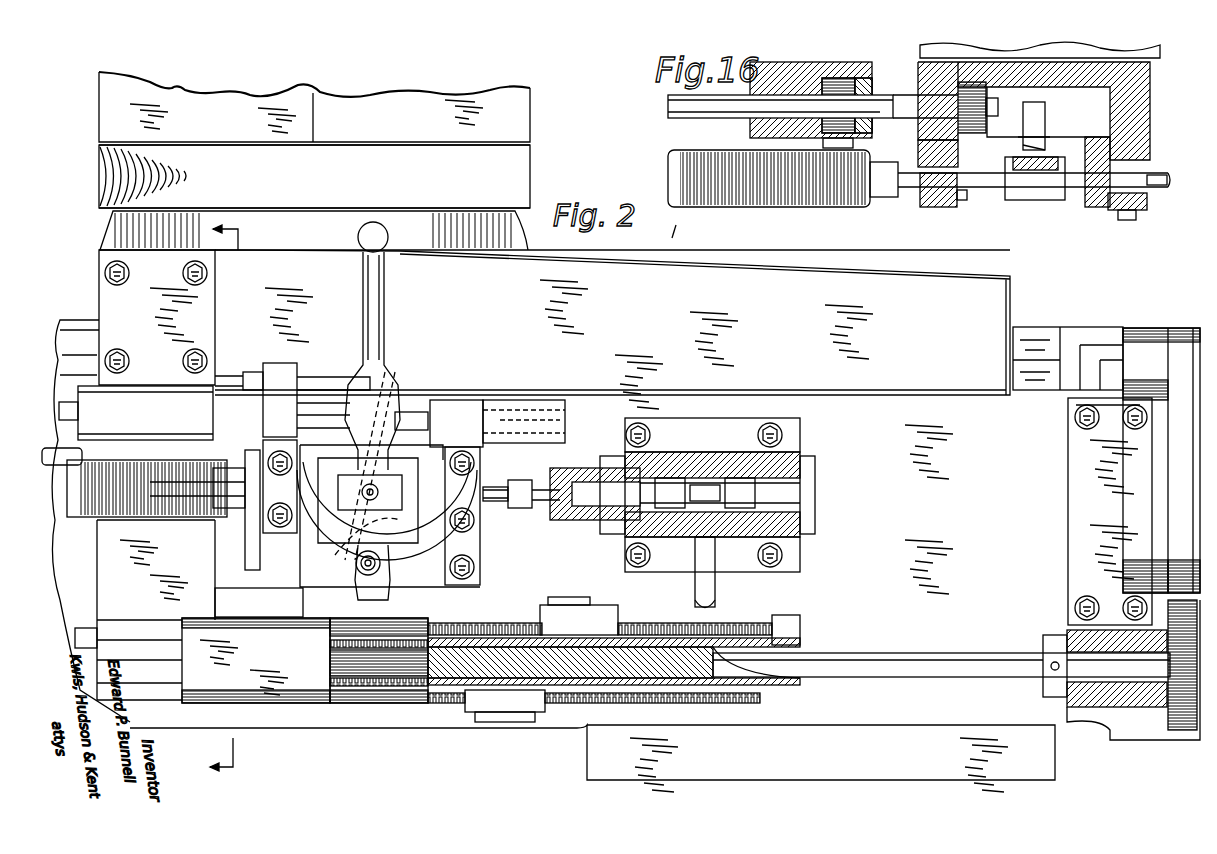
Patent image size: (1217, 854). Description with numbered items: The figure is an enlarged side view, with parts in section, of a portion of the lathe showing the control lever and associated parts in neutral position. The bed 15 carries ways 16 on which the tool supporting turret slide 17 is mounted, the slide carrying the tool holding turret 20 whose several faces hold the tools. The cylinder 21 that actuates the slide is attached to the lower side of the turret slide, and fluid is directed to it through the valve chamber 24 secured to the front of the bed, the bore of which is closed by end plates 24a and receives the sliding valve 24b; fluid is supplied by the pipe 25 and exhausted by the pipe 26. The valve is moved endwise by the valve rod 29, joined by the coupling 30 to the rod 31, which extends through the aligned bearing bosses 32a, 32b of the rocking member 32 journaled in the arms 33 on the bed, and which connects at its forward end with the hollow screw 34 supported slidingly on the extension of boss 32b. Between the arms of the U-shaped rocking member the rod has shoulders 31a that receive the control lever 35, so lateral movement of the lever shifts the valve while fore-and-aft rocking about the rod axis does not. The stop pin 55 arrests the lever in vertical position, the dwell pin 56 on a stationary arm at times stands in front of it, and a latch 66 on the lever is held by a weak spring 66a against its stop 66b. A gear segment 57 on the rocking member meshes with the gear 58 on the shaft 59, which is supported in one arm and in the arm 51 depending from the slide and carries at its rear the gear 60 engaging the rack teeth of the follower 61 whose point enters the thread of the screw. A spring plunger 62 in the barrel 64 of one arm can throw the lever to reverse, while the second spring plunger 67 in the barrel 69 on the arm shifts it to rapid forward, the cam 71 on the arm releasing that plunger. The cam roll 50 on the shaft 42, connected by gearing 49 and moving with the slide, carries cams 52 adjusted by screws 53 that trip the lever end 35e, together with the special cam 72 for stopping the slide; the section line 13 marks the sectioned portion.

In FIG. 2, the section line 13 is at (210, 495).
In FIG. 2, the bed 15 is at (1040, 760).
In FIG. 16, the bed 15 is at (1161, 52).
In FIG. 2, the ways 16 is at (70, 332).
In FIG. 2, the turret slide 17 is at (652, 276).
In FIG. 16, the turret slide 17 is at (682, 232).
In FIG. 2, the tool holding turret 20 is at (531, 100).
In FIG. 2, the cylinder 21 is at (1074, 335).
In FIG. 2, the valve chamber 24 is at (722, 452).
In FIG. 2, the end plates 24a is at (624, 540).
In FIG. 2, the valve 24b is at (801, 493).
In FIG. 2, the pipe 25 is at (716, 590).
In FIG. 2, the pipe 26 is at (695, 605).
In FIG. 2, the valve rod 29 is at (546, 504).
In FIG. 2, the coupling 30 is at (522, 510).
In FIG. 2, the rod 31 is at (497, 506).
In FIG. 16, the rod 31 is at (1078, 190).
In FIG. 16, the shoulders 31a is at (1050, 150).
In FIG. 2, the rocking member 32 is at (424, 545).
In FIG. 16, the rocking member 32 is at (1110, 212).
In FIG. 2, the bearing boss 32a is at (496, 486).
In FIG. 16, the bearing boss 32a is at (1170, 190).
In FIG. 2, the bearing boss 32b is at (247, 522).
In FIG. 16, the bearing boss 32b is at (880, 200).
In FIG. 2, the arms 33 is at (283, 395).
In FIG. 16, the arms 33 is at (1130, 118).
In FIG. 2, the screw 34 is at (146, 520).
In FIG. 16, the screw 34 is at (810, 202).
In FIG. 2, the control lever 35 is at (386, 296).
In FIG. 16, the control lever 35 is at (1040, 200).
In FIG. 2, the lever end 35e is at (358, 596).
In FIG. 2, the shaft 42 is at (956, 655).
In FIG. 2, the gearing 49 is at (1162, 716).
In FIG. 2, the cam roll 50 is at (388, 705).
In FIG. 2, the arm 51 is at (110, 551).
In FIG. 16, the arm 51 is at (800, 62).
In FIG. 2, the cams 52 is at (546, 614).
In FIG. 2, the screw 53 is at (780, 616).
In FIG. 16, the stop pin 55 is at (968, 210).
In FIG. 2, the dwell pin 56 is at (330, 378).
In FIG. 16, the gear segment 57 is at (918, 137).
In FIG. 16, the gear 58 is at (990, 108).
In FIG. 2, the shaft 59 is at (48, 468).
In FIG. 16, the shaft 59 is at (890, 98).
In FIG. 16, the gear 60 is at (840, 80).
In FIG. 2, the follower 61 is at (180, 478).
In FIG. 16, the follower 61 is at (822, 143).
In FIG. 2, the plunger 62 is at (416, 410).
In FIG. 2, the barrel 64 is at (531, 400).
In FIG. 2, the latch 66 is at (396, 376).
In FIG. 2, the weak spring 66a is at (352, 543).
In FIG. 2, the stop 66b is at (384, 480).
In FIG. 2, the second spring plunger 67 is at (308, 420).
In FIG. 2, the barrel 69 is at (150, 396).
In FIG. 2, the cam 71 is at (215, 520).
In FIG. 2, the special cam 72 is at (226, 598).